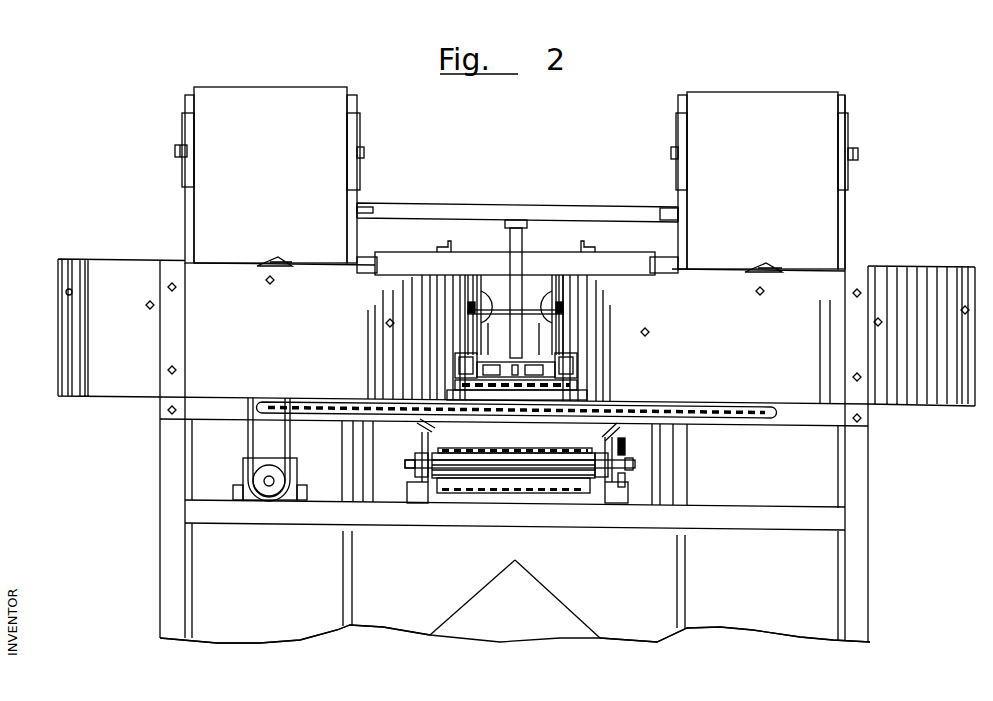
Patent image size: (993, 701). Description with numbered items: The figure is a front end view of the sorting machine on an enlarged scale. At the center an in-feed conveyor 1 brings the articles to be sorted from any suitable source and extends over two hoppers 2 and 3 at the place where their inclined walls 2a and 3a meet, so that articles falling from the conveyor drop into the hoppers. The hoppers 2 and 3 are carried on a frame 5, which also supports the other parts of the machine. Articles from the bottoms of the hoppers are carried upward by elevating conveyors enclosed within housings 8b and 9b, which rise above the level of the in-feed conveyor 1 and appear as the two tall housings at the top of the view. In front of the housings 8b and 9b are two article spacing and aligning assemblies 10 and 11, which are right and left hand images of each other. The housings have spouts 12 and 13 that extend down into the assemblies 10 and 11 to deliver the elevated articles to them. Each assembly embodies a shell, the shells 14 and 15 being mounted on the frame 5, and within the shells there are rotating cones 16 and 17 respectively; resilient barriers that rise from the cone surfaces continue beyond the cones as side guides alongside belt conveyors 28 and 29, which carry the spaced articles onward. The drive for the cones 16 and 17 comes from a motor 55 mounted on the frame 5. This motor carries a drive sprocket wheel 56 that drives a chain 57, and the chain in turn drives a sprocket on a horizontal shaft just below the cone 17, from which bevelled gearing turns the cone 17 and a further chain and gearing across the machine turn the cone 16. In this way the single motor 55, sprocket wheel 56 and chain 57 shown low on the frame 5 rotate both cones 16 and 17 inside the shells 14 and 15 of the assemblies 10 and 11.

The in-feed conveyor 1 is at (508, 445).
The hopper 2 is at (613, 582).
The inclined wall 2a is at (552, 593).
The hopper 3 is at (395, 608).
The inclined wall 3a is at (470, 598).
The frame 5 is at (165, 440).
The housing 8b is at (847, 202).
The housing 9b is at (185, 193).
The article spacing and aligning assembly 10 is at (918, 270).
The article spacing and aligning assembly 11 is at (52, 334).
The spout 12 is at (767, 240).
The spout 13 is at (277, 237).
The shell 14 is at (722, 350).
The shell 15 is at (283, 346).
The rotating cone 16 is at (757, 268).
The rotating cone 17 is at (267, 262).
The belt conveyor 28 is at (578, 366).
The belt conveyor 29 is at (466, 360).
The motor 55 is at (245, 467).
The drive sprocket wheel 56 is at (270, 487).
The chain 57 is at (250, 434).